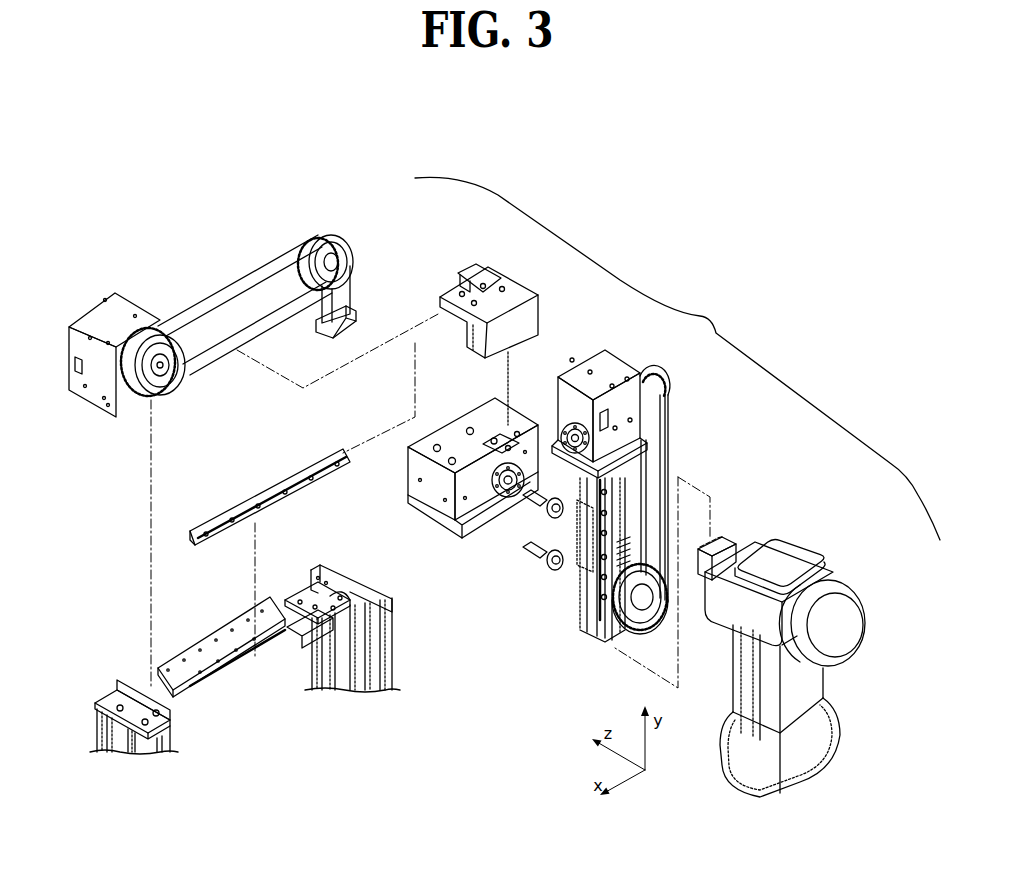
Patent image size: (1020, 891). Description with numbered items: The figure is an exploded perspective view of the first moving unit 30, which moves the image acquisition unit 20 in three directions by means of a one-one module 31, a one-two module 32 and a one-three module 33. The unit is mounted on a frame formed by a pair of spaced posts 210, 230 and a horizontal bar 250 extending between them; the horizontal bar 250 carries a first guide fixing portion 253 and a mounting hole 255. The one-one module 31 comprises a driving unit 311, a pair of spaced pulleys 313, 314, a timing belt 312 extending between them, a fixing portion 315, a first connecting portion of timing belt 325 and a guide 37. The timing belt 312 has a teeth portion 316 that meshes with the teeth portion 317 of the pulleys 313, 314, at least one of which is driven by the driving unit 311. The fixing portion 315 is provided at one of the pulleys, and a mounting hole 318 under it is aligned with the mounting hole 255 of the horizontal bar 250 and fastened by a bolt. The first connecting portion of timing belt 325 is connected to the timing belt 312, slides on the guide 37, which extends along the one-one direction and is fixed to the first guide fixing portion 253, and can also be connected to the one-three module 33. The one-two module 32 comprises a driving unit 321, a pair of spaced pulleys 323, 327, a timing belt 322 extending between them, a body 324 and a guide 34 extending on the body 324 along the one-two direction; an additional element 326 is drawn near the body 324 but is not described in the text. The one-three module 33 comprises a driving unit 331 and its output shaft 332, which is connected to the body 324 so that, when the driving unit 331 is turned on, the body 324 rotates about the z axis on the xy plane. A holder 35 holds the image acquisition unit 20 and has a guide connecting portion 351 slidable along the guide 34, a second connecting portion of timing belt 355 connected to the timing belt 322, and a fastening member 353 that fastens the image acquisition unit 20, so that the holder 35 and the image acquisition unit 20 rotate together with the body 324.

The image acquisition unit 20 is at (818, 741).
The first moving unit 30 is at (677, 358).
The 1-1 module 31 is at (309, 233).
The driving unit 311 is at (109, 318).
The timing belt 312 is at (236, 288).
The pulley 313 is at (157, 385).
The pulley 314 is at (352, 252).
The fixing portion 315 is at (341, 287).
The teeth portion 316 is at (186, 330).
The teeth portion 317 is at (291, 252).
The mounting hole 318 is at (357, 318).
The 1-2 module 32 is at (686, 402).
The driving unit 321 is at (608, 362).
The timing belt 322 is at (667, 456).
The pulley 323 is at (658, 389).
The body 324 is at (598, 643).
The first connecting portion of timing belt 325 is at (513, 291).
The fastening hole 326 is at (600, 580).
The pulley 327 is at (600, 590).
The 1-3 module 33 is at (468, 540).
The driving unit 331 is at (480, 504).
The output shaft 332 is at (524, 442).
The guide 34 is at (593, 607).
The holder 35 is at (836, 558).
The guide connecting portion 351 is at (733, 546).
The fastening member 353 is at (853, 613).
The second connecting portion of timing belt 355 is at (757, 534).
The guide 37 is at (289, 482).
The post 210 is at (117, 742).
The post 230 is at (388, 655).
The horizontal bar 250 is at (258, 672).
The first guide fixing portion 253 is at (215, 682).
The mounting hole 255 is at (288, 610).